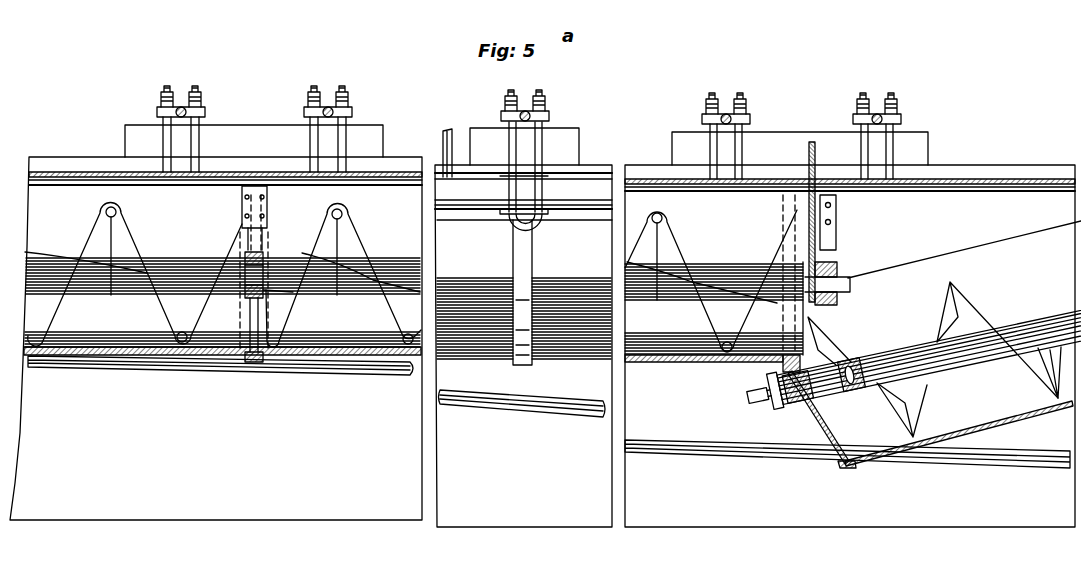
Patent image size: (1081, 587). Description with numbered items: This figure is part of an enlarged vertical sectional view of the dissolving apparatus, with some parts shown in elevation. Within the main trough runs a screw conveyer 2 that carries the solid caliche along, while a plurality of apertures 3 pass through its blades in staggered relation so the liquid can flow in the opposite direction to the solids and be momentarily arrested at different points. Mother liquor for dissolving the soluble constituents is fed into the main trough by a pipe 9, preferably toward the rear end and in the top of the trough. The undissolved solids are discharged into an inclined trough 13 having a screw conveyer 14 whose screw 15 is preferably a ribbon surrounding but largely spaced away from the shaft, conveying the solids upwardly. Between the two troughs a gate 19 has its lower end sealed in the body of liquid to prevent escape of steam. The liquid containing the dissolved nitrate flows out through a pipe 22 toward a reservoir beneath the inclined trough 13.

The screw conveyer 2 is at (125, 242).
The apertures 3 is at (116, 210).
The pipe 9 is at (452, 140).
The inclined trough 13 is at (985, 423).
The screw conveyer 14 is at (970, 328).
The screw 15 is at (963, 305).
The gate 19 is at (813, 158).
The pipe 22 is at (380, 367).